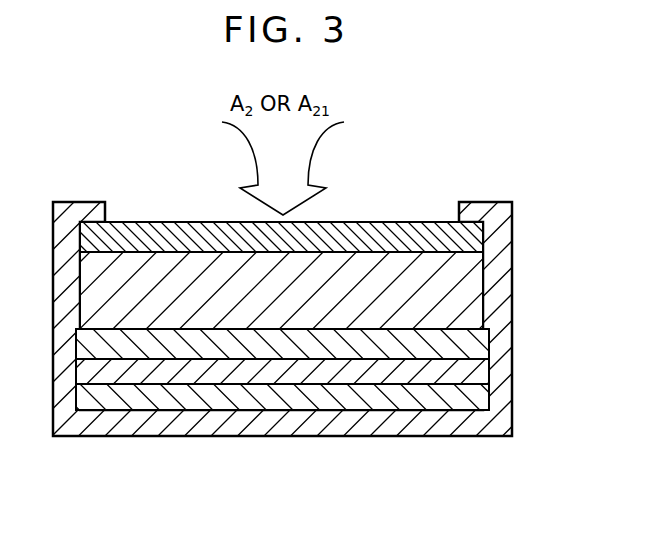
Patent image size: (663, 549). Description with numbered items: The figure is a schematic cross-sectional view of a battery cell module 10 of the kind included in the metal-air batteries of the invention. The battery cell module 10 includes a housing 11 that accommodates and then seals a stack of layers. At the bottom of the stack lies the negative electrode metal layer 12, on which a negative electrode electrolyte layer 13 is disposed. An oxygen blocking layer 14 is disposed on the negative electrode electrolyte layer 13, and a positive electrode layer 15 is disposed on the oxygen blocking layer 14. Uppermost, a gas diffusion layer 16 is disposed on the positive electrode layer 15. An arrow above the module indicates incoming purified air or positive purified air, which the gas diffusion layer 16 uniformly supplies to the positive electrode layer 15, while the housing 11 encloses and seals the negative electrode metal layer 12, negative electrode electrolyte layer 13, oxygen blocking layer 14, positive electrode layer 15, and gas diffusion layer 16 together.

The battery cell module 10 is at (530, 172).
The housing 11 is at (282, 432).
The negative electrode metal layer 12 is at (468, 398).
The negative electrode electrolyte layer 13 is at (468, 372).
The oxygen blocking layer 14 is at (468, 344).
The positive electrode layer 15 is at (468, 291).
The gas diffusion layer 16 is at (470, 241).